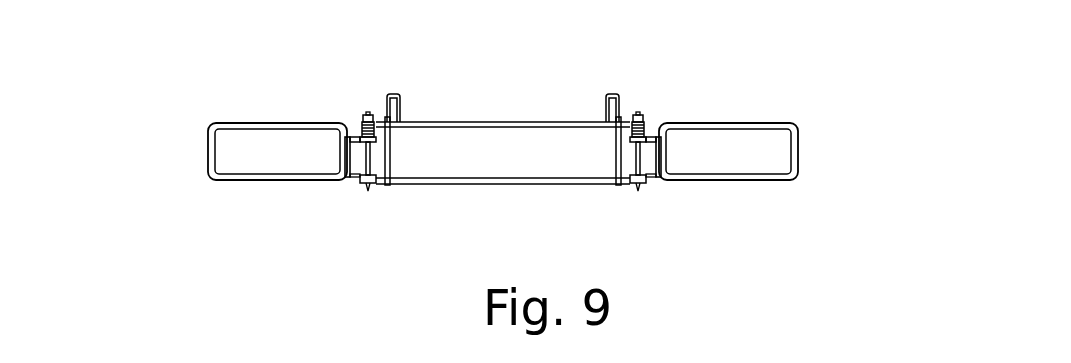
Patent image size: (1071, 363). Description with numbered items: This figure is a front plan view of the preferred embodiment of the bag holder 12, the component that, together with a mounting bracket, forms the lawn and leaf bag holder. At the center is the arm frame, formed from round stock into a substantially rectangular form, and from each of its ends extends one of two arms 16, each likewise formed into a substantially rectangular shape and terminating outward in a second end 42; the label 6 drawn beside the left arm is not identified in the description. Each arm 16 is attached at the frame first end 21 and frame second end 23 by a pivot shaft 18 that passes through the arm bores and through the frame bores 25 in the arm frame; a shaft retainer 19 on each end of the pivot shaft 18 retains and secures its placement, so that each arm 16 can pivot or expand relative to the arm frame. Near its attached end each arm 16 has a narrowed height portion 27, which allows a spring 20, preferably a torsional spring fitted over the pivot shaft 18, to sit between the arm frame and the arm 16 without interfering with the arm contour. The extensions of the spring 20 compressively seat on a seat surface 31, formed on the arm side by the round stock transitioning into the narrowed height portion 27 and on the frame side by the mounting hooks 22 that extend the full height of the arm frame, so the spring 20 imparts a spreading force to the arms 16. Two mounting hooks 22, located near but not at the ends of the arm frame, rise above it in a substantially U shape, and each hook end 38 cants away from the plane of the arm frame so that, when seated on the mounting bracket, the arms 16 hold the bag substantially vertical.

The bag holder 12 is at (806, 89).
The first paddle 6 is at (209, 152).
The arm 16 is at (797, 153).
The second end 42 is at (505, 146).
The pivot shaft 18 is at (362, 163).
The shaft retainer 19 is at (368, 193).
The spring 20 is at (660, 130).
The frame first end 21 is at (633, 188).
The mounting hook 22 is at (620, 150).
The frame second end 23 is at (373, 187).
The frame bore 25 is at (371, 113).
The narrowed height portion 27 is at (690, 213).
The seat surface 31 is at (344, 127).
The hook end 38 is at (605, 108).